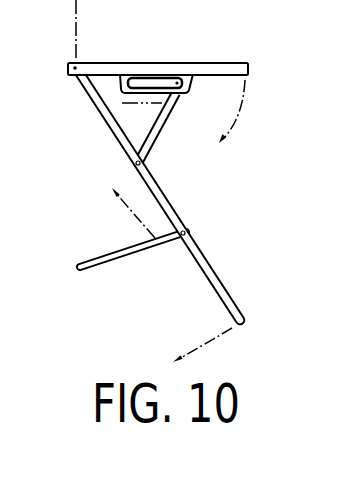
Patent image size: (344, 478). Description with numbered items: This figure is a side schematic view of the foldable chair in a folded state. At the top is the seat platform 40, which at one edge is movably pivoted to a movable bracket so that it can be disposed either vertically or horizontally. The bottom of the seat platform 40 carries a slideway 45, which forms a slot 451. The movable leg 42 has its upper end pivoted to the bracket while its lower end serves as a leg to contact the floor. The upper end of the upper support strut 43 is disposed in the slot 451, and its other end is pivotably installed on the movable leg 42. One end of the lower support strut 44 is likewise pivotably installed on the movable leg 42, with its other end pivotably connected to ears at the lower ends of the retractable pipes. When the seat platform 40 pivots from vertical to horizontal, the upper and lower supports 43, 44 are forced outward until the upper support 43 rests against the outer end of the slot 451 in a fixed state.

The seat platform 40 is at (218, 63).
The movable leg 42 is at (209, 266).
The upper support strut 43 is at (160, 133).
The lower support strut 44 is at (120, 258).
The slideway 45 is at (121, 81).
The slot 451 is at (148, 83).